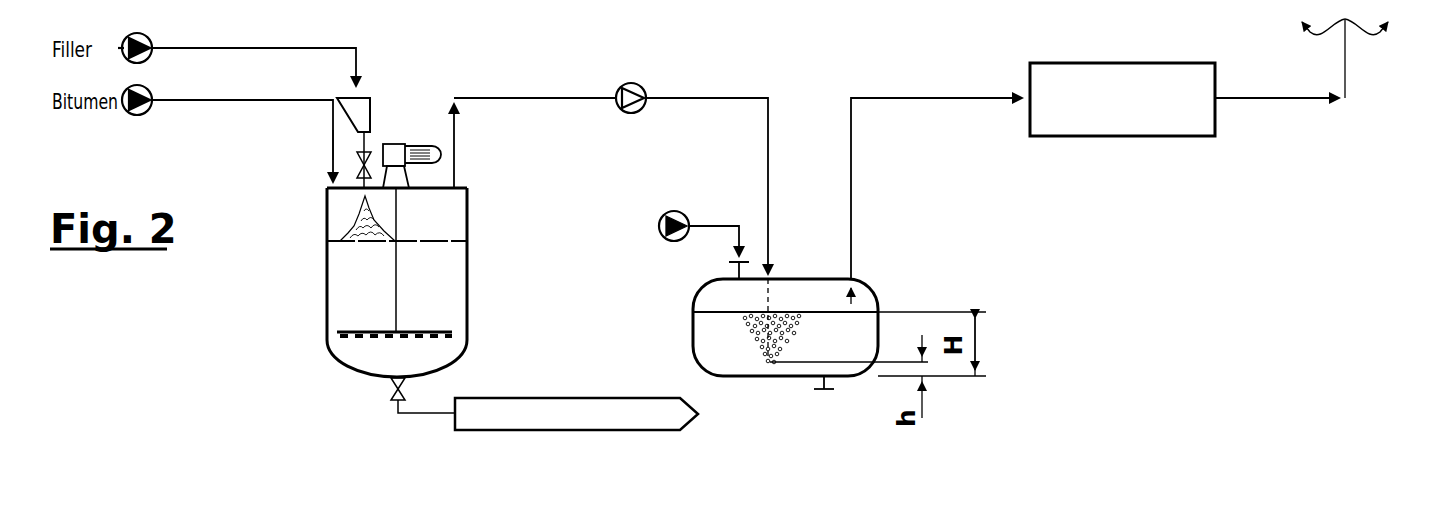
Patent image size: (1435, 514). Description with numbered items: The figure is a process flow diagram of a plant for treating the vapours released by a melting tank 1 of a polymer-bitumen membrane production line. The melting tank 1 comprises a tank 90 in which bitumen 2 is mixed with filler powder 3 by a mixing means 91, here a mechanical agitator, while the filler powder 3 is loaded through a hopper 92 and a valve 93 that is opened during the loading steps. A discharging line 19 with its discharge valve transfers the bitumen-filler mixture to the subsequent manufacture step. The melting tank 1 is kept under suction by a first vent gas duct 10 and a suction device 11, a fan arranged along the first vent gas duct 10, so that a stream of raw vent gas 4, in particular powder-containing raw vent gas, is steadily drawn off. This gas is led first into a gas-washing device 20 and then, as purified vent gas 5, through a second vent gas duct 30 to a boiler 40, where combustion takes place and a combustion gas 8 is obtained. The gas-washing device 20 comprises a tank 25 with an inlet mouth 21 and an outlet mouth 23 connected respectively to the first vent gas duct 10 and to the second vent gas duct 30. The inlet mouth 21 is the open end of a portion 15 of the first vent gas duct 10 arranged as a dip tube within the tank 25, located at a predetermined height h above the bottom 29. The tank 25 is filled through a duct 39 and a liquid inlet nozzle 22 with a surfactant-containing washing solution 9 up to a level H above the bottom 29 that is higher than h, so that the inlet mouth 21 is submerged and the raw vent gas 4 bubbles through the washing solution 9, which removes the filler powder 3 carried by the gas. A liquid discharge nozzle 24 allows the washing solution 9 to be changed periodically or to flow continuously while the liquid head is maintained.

The melting tank 1 is at (384, 278).
The bitumen 2 is at (264, 100).
The filler powder 3 is at (265, 48).
The raw vent gas 4 is at (786, 336).
The purified vent gas 5 is at (846, 295).
The combustion gas 8 is at (1380, 35).
The washing solution 9 is at (717, 356).
The first vent gas duct 10 is at (578, 98).
The suction device 11 is at (624, 112).
The portion of first vent gas duct 15 is at (771, 299).
The discharging line 19 is at (430, 415).
The gas-washing device 20 is at (838, 279).
The inlet mouth 21 is at (776, 378).
The liquid inlet nozzle 22 is at (742, 265).
The outlet mouth 23 is at (853, 279).
The liquid discharge nozzle 24 is at (832, 387).
The tank 25 is at (871, 301).
The bottom 29 is at (742, 377).
The second vent gas duct 30 is at (961, 98).
The duct 39 is at (722, 226).
The boiler 40 is at (1020, 70).
The tank 90 is at (329, 318).
The mixing means 91 is at (436, 338).
The hopper 92 is at (374, 117).
The valve 93 is at (310, 147).